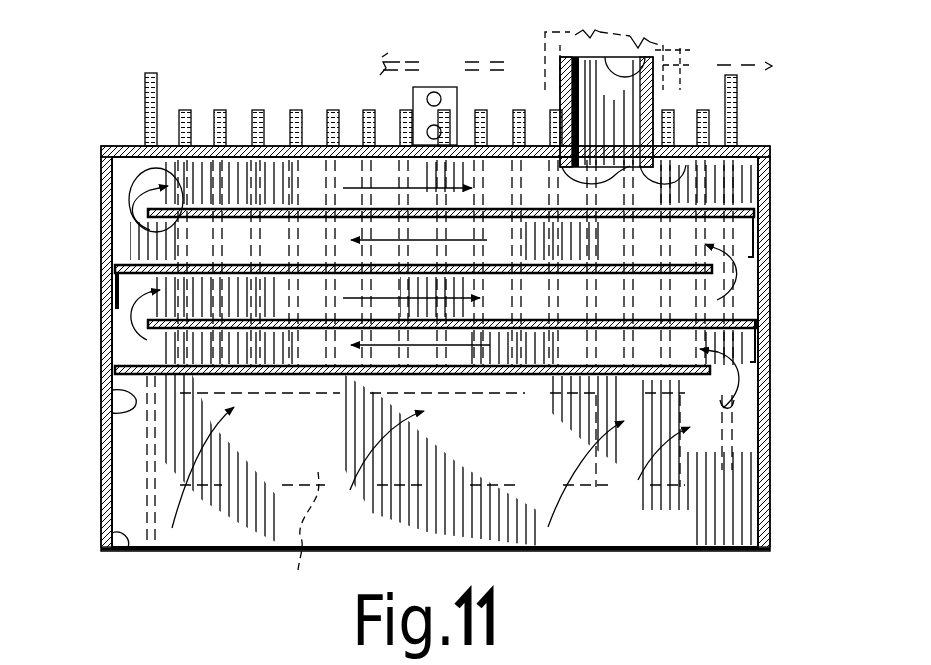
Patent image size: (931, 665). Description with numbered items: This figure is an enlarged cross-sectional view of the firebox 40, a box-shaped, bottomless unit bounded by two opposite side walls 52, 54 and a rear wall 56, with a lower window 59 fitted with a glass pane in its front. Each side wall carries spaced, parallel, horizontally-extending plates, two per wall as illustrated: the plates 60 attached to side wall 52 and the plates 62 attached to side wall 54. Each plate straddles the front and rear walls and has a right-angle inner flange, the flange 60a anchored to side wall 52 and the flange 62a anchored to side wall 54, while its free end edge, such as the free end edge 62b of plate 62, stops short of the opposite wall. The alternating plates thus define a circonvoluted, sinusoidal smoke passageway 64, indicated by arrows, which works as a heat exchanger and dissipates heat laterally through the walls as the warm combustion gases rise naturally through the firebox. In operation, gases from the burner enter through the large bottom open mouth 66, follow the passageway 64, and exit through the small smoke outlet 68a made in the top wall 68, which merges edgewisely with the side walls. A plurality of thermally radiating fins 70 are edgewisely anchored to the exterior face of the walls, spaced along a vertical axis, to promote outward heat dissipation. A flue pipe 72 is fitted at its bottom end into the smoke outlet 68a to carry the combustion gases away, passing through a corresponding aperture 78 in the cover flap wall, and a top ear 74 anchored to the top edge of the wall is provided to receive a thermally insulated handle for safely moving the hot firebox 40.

The firebox 40 is at (96, 450).
The side wall 52 is at (104, 328).
The side wall 54 is at (770, 412).
The rear wall 56 is at (291, 508).
The lower window 59 is at (317, 538).
The plate 60 is at (130, 265).
The inner flange 60a is at (112, 410).
The plate 62 is at (155, 170).
The inner flange 62a is at (758, 352).
The free end edge 62b is at (140, 210).
The smoke passageway 64 is at (440, 243).
The bottom open mouth 66 is at (128, 549).
The top wall 68 is at (236, 146).
The smoke outlet 68a is at (677, 173).
The thermally radiating fins 70 is at (220, 110).
The flue pipe 72 is at (612, 58).
The top ear 74 is at (413, 98).
The aperture 78 is at (663, 50).